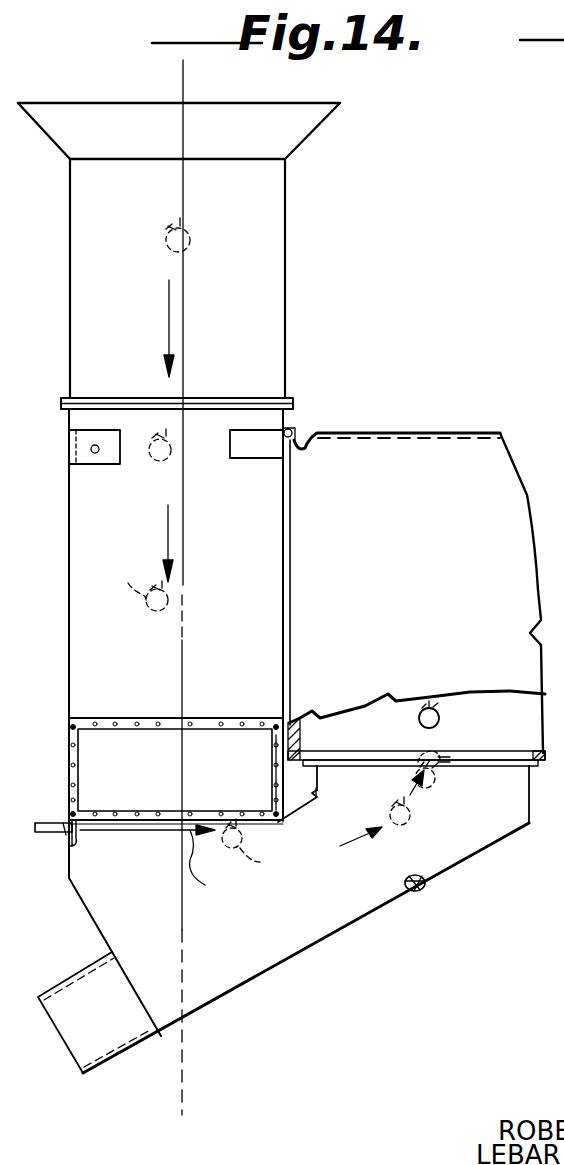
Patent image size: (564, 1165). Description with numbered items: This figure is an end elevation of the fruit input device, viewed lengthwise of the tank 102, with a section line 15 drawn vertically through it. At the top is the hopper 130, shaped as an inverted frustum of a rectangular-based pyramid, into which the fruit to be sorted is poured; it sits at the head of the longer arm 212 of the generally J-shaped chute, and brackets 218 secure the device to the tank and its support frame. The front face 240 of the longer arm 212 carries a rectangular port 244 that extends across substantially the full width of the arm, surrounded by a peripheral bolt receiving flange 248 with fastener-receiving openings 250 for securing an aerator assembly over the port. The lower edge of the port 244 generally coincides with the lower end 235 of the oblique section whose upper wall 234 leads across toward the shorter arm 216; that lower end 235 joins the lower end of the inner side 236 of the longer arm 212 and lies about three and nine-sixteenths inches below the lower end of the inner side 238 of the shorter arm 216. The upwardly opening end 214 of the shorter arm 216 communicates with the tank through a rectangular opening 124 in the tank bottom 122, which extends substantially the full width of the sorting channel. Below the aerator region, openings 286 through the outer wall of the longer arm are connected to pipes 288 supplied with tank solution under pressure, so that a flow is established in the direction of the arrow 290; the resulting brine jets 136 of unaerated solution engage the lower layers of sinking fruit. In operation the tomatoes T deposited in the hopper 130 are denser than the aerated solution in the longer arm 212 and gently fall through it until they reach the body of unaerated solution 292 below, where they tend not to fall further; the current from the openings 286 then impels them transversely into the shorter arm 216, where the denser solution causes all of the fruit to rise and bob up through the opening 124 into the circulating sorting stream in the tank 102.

The section line 15- 15 is at (150, 72).
The hopper 130 is at (318, 112).
The tank 102 is at (420, 448).
The longer arm 212 is at (75, 598).
The brackets 218 is at (108, 465).
The front face 240 is at (148, 667).
The rectangular port 244 is at (156, 726).
The inner side 236 is at (276, 770).
The upper wall 234 is at (296, 805).
The inner side 238 is at (316, 790).
The tank bottom 122 is at (350, 768).
The rectangular opening 124 is at (330, 760).
The upwardly opening end 214 is at (428, 755).
The shorter arm 216 is at (516, 808).
The lower end 235 is at (274, 844).
The openings 286 is at (62, 825).
The pipes 288 is at (46, 834).
The brine jets 136 is at (78, 834).
The fastener-receiving openings 250 is at (129, 826).
The peripheral bolt receiving flange 248 is at (149, 826).
The arrow 290 is at (224, 870).
The body of unaerated solution 292 is at (420, 892).
The tomatoes T is at (192, 233).